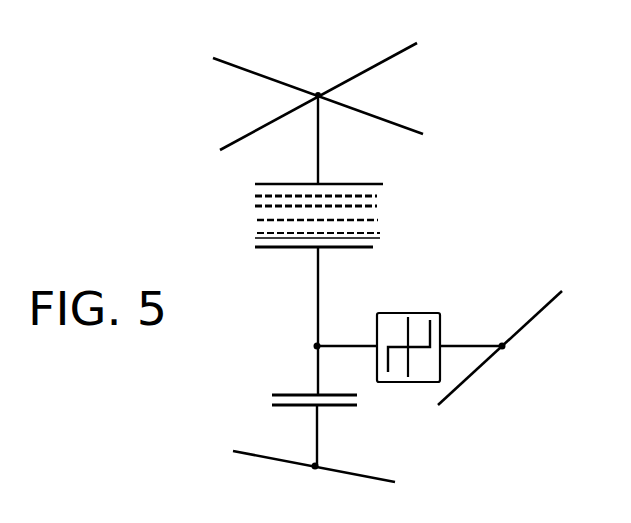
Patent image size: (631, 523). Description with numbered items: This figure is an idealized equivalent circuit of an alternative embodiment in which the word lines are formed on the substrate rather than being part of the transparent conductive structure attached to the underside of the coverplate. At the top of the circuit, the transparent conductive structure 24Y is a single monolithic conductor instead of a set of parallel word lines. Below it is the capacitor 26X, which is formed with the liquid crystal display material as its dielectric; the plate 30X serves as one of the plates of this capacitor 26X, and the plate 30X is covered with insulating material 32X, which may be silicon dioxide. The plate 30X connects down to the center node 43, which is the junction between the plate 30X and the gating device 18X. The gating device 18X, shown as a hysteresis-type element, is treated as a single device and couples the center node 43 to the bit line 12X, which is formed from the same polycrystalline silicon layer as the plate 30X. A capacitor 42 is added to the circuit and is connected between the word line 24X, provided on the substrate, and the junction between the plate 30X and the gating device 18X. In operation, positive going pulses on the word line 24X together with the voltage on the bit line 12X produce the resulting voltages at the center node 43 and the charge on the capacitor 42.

The transparent conductive structure 24Y is at (380, 93).
The capacitor 26X is at (370, 213).
The plate 30X is at (282, 248).
The insulating material 32X is at (368, 244).
The center node 43 is at (312, 344).
The gating device 18X is at (440, 320).
The bit line 12X is at (545, 307).
The capacitor 42 is at (272, 395).
The word line 24X is at (375, 477).